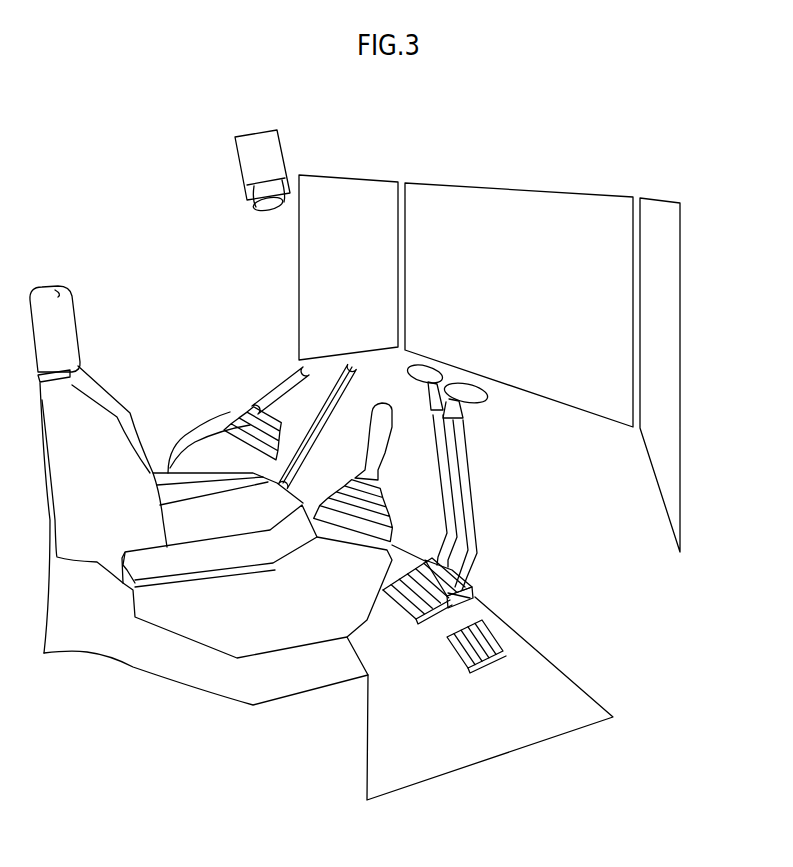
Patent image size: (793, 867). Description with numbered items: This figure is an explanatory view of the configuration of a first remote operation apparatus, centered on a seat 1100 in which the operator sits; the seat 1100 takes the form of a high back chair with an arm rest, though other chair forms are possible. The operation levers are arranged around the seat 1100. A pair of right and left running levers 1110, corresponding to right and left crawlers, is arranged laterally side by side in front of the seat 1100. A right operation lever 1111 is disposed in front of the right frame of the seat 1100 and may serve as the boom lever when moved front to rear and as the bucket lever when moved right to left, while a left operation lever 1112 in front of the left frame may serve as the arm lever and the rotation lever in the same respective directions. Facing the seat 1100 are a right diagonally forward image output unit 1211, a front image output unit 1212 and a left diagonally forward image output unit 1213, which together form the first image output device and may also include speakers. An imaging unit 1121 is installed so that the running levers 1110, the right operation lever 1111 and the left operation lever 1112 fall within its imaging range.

The seat 1100 is at (125, 272).
The running levers 1110 is at (475, 468).
The right operation lever 1111 is at (390, 430).
The left operation lever 1112 is at (288, 373).
The imaging unit 1121 is at (255, 130).
The right diagonally forward image output unit 1211 is at (670, 198).
The front image output unit 1212 is at (518, 190).
The left diagonally forward image output unit 1213 is at (363, 178).